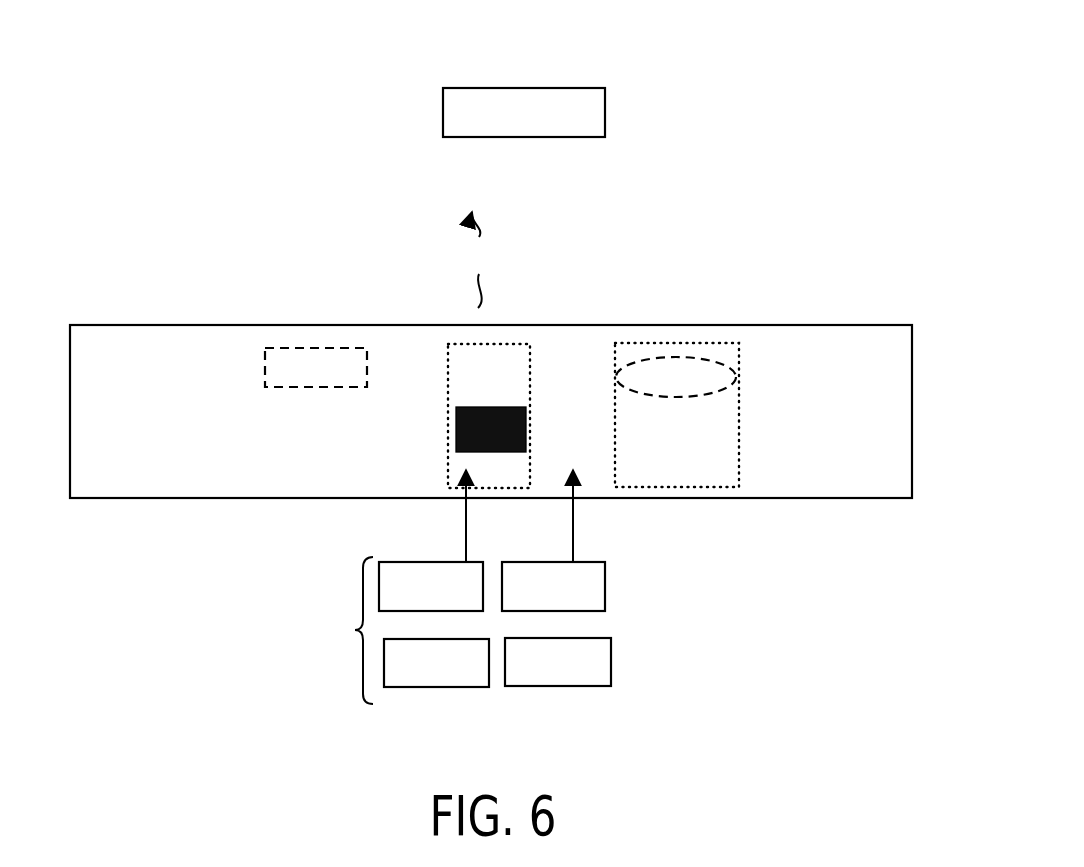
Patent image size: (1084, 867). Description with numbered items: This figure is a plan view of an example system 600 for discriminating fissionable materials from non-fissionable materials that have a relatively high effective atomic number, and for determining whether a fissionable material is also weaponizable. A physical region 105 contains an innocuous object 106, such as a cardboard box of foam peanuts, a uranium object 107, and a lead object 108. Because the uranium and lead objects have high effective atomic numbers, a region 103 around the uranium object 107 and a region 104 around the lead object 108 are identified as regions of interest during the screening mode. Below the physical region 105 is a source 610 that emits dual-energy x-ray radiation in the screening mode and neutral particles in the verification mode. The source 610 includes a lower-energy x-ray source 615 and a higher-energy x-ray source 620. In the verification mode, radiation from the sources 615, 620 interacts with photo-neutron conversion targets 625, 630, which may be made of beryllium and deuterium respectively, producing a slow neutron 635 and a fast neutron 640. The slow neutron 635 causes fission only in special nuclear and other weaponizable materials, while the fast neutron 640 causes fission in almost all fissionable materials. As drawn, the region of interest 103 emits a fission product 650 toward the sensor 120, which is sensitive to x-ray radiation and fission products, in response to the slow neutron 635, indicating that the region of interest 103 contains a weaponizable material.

The system 600 is at (538, 38).
The sensor 120 is at (524, 112).
The fission product 650 is at (476, 260).
The physical region 105 is at (811, 308).
The object 106 is at (316, 367).
The region of interest 103 is at (522, 342).
The object 107 is at (492, 410).
The region 104 is at (712, 342).
The object 108 is at (676, 377).
The slow neutron 635 is at (464, 516).
The fast neutron 640 is at (571, 516).
The source 610 is at (339, 630).
The photo-neutron conversion target 625 is at (431, 586).
The photo-neutron conversion target 630 is at (553, 586).
The source 615 is at (436, 663).
The source 620 is at (558, 662).